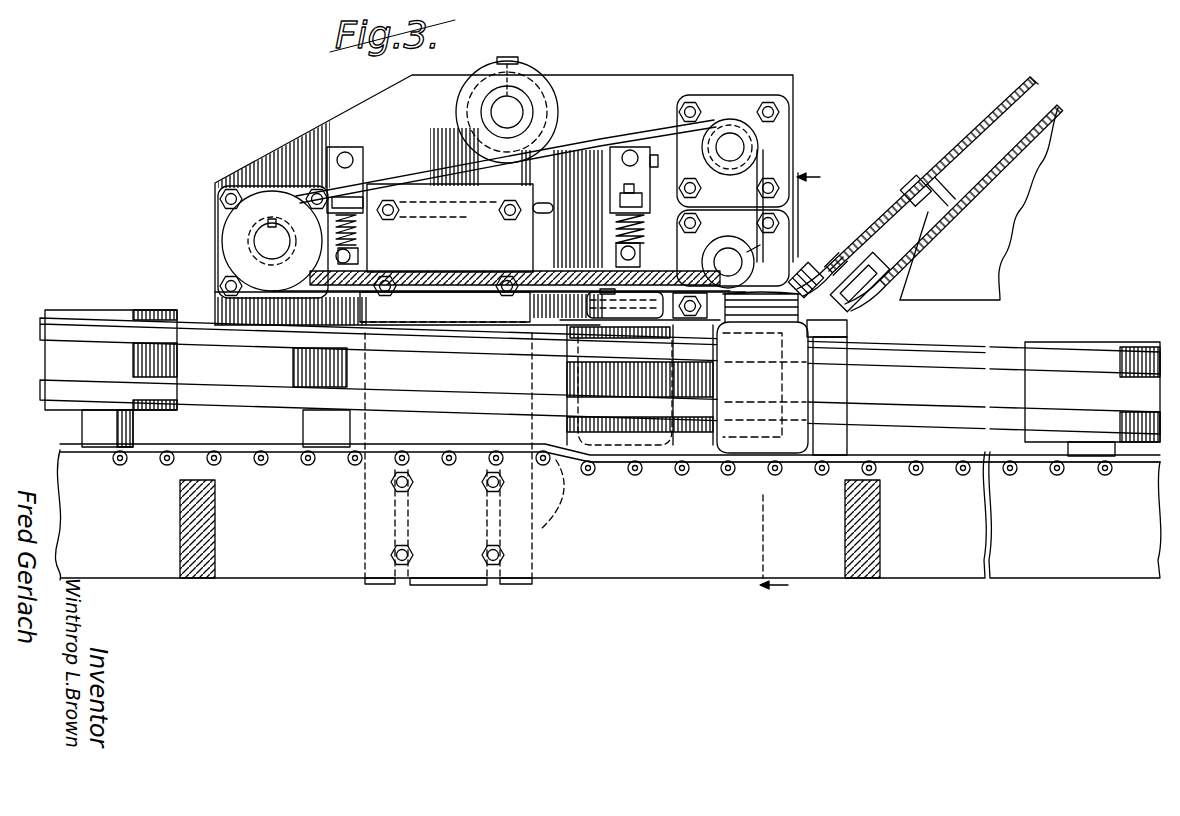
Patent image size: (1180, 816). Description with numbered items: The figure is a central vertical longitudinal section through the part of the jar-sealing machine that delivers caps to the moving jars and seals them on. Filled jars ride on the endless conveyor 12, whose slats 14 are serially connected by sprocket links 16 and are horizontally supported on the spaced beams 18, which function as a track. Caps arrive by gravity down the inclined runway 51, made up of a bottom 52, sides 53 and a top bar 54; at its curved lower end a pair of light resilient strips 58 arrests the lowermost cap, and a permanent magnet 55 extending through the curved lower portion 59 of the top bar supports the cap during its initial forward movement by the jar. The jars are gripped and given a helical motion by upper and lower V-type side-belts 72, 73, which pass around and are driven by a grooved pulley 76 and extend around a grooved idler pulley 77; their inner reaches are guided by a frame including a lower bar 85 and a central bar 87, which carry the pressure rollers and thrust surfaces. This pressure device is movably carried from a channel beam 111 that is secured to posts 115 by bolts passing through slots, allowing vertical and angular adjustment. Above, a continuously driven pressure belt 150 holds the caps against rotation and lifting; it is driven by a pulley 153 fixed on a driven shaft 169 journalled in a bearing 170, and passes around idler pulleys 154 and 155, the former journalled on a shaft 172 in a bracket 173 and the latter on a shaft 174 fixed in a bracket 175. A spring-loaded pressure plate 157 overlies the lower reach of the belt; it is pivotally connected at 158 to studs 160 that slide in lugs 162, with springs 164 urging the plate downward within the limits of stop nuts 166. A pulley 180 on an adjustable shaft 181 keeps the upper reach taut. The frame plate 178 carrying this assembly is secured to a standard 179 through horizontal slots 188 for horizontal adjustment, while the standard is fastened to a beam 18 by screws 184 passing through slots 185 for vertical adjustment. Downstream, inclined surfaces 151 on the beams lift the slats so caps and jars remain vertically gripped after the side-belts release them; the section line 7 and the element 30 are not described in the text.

The frame plate 178 is at (385, 104).
The standard 179 is at (447, 185).
The pulley 180 is at (562, 100).
The shaft 181 is at (511, 105).
The pressure belt 150 is at (591, 146).
The lug 162 is at (639, 154).
The bracket 175 is at (777, 122).
The shaft 174 is at (735, 146).
The idler roll 155 is at (745, 149).
The section line 7 is at (790, 389).
The top bar 54 is at (904, 203).
The sides 53 is at (967, 172).
The inclined runway 51 is at (1008, 101).
The stop nuts 166 is at (350, 200).
The bearing 170 is at (220, 206).
The driven shaft 169 is at (262, 238).
The pulley 153 is at (238, 246).
The springs 164 is at (354, 228).
The horizontal slots 188 is at (453, 217).
The pivotal connection 158 is at (352, 255).
The pressure plate 157 is at (452, 271).
The studs 160 is at (628, 195).
The shaft 172 is at (727, 265).
The bracket 173 is at (780, 236).
The idler pulley 154 is at (748, 253).
The curved lower portion 59 is at (830, 262).
The permanent magnet 55 is at (803, 270).
The bottom 52 is at (911, 248).
The resilient strips 58 is at (880, 290).
The supply plate 30 is at (998, 259).
The grooved pulley 76 is at (78, 312).
The channel beam 111 is at (850, 338).
The upper side-belt 72 is at (900, 347).
The grooved idler pulley 77 is at (1075, 345).
The lower side-belt 73 is at (245, 389).
The central bar 87 is at (573, 377).
The conveyor 12 is at (245, 432).
The posts 115 is at (340, 497).
The screws 184 is at (407, 548).
The inclined surfaces 151 is at (554, 495).
The lower bar 85 is at (613, 434).
The slats 14 is at (662, 461).
The sprocket links 16 is at (708, 468).
The beams 18 is at (530, 529).
The slots 185 is at (403, 582).